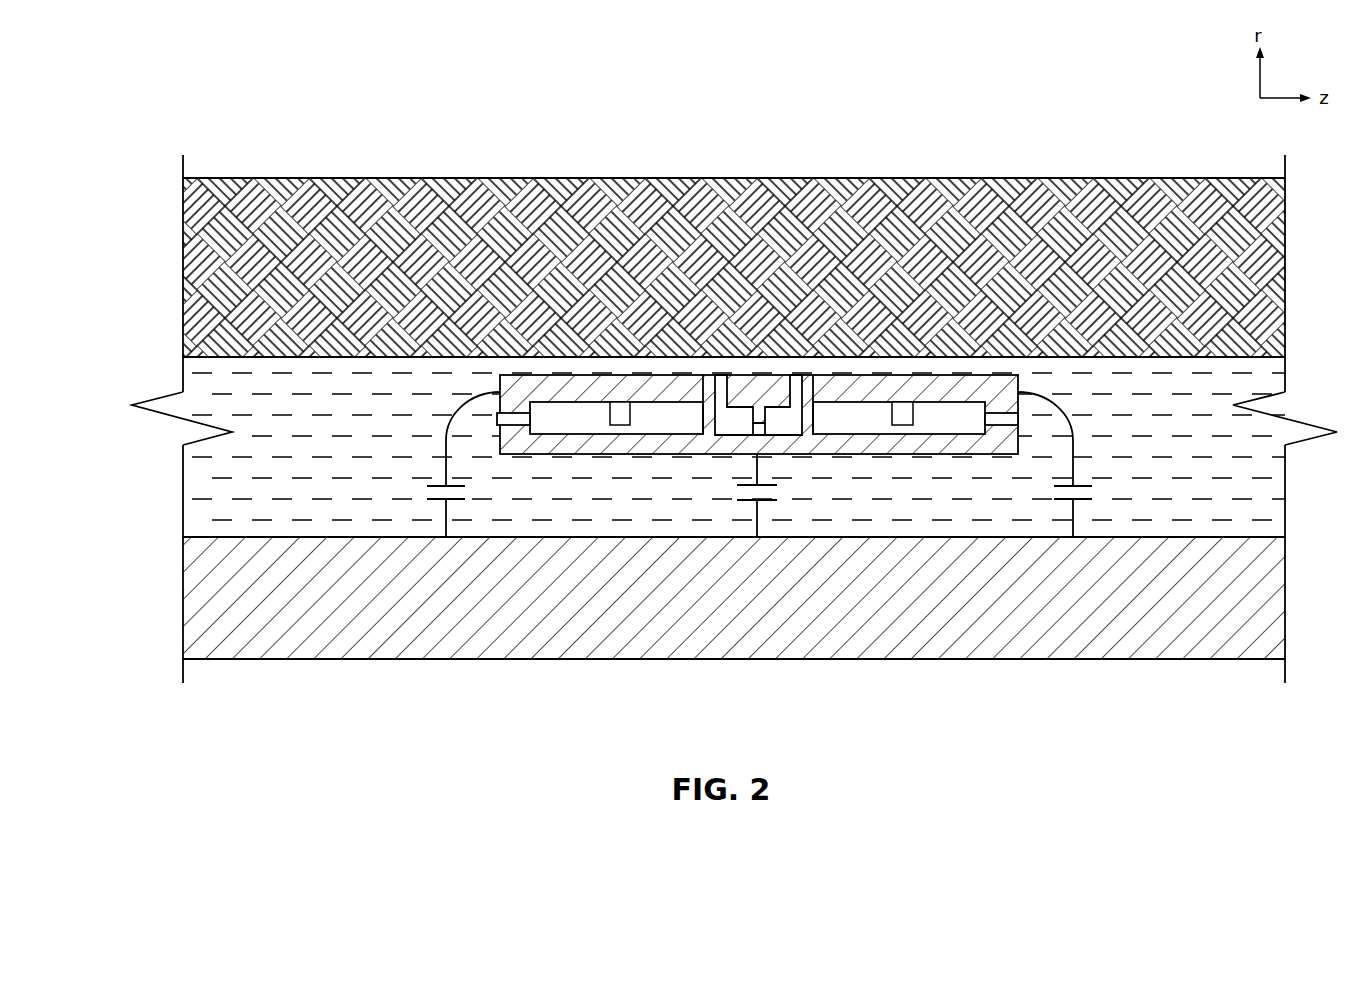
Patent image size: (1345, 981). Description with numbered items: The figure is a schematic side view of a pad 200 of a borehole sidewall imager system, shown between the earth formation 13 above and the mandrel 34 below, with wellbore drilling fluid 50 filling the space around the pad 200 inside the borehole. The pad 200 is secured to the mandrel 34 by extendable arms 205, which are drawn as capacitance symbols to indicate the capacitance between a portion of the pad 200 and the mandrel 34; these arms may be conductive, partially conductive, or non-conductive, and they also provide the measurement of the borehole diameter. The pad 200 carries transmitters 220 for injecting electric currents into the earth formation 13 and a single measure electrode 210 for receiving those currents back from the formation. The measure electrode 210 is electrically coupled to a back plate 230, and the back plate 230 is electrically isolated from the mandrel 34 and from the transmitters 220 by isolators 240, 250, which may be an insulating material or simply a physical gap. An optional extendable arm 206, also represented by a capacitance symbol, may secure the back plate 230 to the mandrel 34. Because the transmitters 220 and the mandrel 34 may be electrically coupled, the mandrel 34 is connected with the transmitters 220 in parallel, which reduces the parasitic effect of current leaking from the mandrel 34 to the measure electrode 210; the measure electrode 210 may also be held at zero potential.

The earth formation 13 is at (1150, 200).
The wellbore drilling fluid 50 is at (738, 327).
The mandrel 34 is at (1240, 640).
The pad 200 is at (816, 418).
The transmitters 220 is at (725, 284).
The isolator 250 is at (692, 285).
The measure electrode 210 is at (720, 282).
The isolator 240 is at (515, 425).
The extendable arms 205 is at (457, 500).
The back plate 230 is at (830, 578).
The optional extendable arm 206 is at (763, 503).